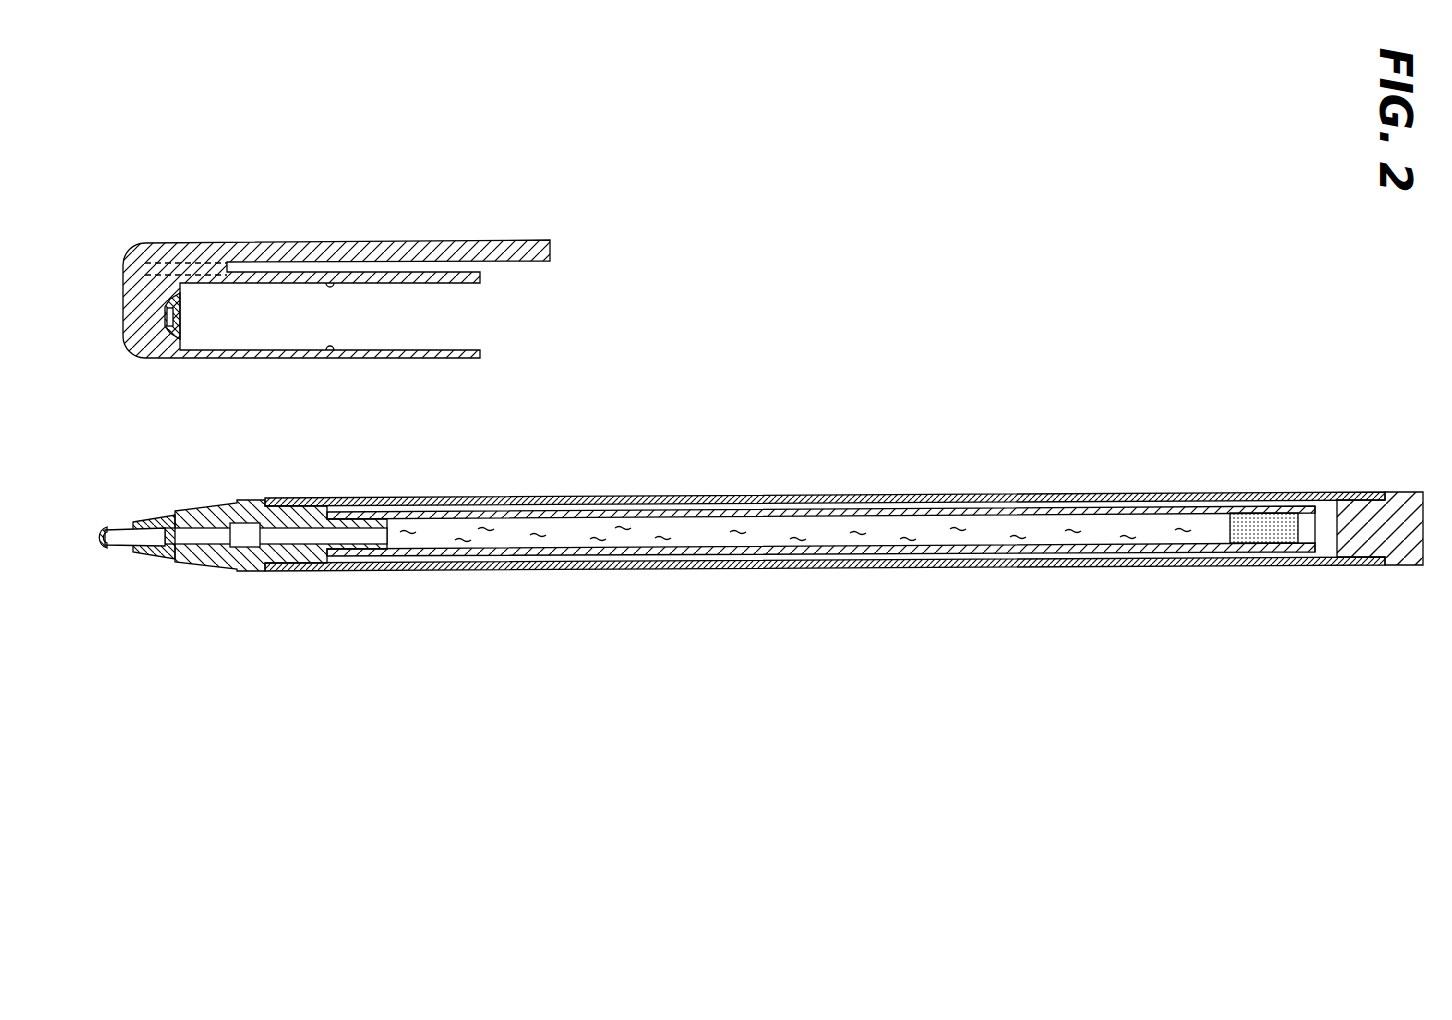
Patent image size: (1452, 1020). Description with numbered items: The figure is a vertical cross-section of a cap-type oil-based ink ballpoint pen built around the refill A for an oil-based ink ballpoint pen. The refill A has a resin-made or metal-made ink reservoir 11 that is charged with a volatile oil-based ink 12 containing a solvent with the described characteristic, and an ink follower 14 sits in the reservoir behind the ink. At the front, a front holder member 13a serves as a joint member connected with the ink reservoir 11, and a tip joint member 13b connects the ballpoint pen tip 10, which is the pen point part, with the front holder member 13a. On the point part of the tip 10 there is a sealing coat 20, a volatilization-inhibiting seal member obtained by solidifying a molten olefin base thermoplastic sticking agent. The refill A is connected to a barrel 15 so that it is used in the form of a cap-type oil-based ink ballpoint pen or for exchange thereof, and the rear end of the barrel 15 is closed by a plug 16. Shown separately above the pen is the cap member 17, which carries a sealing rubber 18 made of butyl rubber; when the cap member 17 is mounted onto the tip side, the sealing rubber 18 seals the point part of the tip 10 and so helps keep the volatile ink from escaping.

The ballpoint pen tip 10 is at (112, 532).
The ink reservoir 11 is at (440, 510).
The volatile oil-based ink 12 is at (555, 525).
The front holder member 13a is at (222, 570).
The tip joint member 13b is at (162, 557).
The ink follower 14 is at (1260, 515).
The barrel 15 is at (395, 572).
The plug 16 is at (1398, 556).
The cap member 17 is at (158, 252).
The sealing rubber 18 is at (180, 322).
The sealing coat 20 is at (96, 550).
The refill for a ballpoint pen A is at (787, 513).